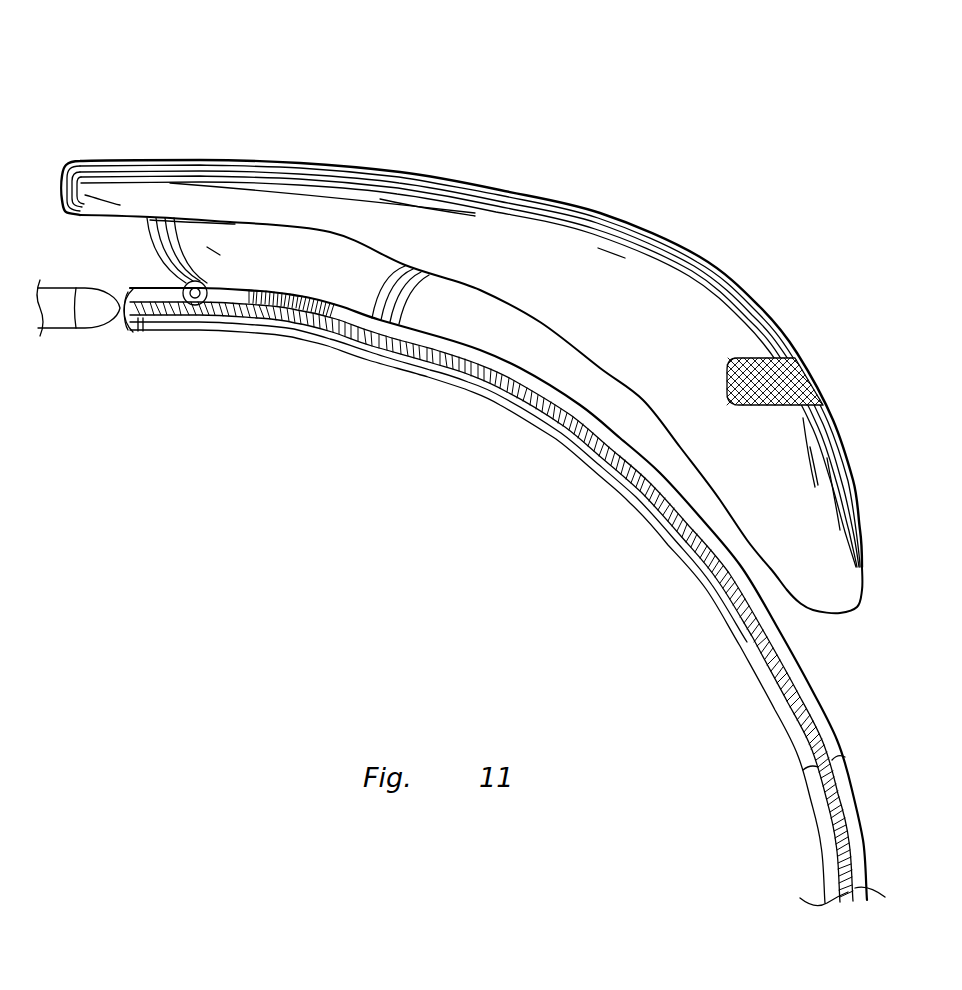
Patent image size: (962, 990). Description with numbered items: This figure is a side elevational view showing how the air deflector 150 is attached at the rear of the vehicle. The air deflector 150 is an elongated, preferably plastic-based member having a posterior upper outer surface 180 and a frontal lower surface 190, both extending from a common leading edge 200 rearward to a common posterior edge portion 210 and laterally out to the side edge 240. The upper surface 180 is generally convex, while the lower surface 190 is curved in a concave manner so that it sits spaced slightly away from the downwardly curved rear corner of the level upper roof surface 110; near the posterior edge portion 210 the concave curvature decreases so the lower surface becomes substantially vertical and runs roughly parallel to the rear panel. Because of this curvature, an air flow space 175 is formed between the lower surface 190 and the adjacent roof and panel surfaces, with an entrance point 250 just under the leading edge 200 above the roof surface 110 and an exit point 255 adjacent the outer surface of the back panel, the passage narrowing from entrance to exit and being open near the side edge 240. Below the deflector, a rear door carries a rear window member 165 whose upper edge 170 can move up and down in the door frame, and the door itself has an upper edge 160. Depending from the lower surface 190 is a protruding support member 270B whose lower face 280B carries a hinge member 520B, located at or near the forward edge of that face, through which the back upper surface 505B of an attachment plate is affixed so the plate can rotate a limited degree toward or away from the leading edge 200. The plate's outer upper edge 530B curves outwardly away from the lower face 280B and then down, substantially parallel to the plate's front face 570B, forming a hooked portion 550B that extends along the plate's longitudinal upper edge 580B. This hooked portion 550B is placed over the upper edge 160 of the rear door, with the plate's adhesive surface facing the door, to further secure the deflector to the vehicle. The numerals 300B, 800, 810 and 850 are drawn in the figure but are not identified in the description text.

The upper roof surface 110 is at (67, 328).
The air deflector 150 is at (655, 232).
The upper edge of door member 160 is at (163, 330).
The rear window member 165 is at (748, 632).
The upper edge of window 170 is at (260, 335).
The air flow space 175 is at (611, 400).
The upper outer surface 180 is at (732, 278).
The lower surface 190 is at (325, 232).
The leading edge 200 is at (78, 186).
The posterior edge portion 210 is at (862, 547).
The side edge 240 is at (470, 176).
The entrance point 250 is at (90, 252).
The exit point 255 is at (803, 623).
The protruding support member 270B is at (354, 274).
The lower face of protruding member 280B is at (318, 332).
The band hatched layer 300B is at (292, 338).
The back upper surface of attachment plate 505B is at (202, 287).
The hinge member 520B is at (207, 292).
The outer upper edge of attachment plate 530B is at (127, 290).
The hooked portion 550B is at (133, 325).
The front face of plate member 570B is at (380, 288).
The longitudinal upper edge of fastening plate 580B is at (120, 332).
The pad 800 is at (791, 365).
The pad edge 810 is at (717, 380).
The pad cross-hatch surface 850 is at (791, 388).